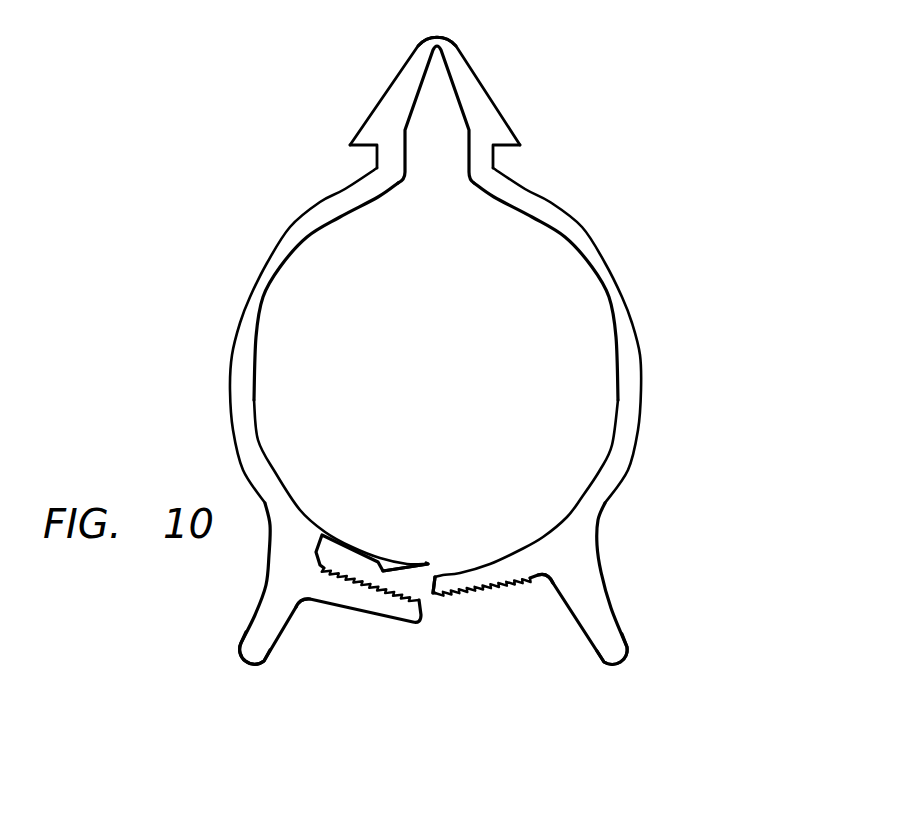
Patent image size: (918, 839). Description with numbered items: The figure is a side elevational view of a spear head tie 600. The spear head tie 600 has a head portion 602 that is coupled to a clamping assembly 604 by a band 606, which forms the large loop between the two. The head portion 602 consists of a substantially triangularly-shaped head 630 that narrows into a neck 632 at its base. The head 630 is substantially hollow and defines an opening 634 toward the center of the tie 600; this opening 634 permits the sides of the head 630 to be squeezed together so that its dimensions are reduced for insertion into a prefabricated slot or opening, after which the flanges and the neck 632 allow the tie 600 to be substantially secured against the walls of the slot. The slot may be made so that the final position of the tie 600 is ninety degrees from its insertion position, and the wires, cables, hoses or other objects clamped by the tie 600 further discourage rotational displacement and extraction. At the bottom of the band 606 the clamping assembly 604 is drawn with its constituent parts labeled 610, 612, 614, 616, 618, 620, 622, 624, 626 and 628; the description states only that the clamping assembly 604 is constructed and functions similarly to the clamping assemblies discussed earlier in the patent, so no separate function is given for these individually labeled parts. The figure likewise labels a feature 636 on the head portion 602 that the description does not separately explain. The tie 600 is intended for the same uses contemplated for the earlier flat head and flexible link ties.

The spear head tie 600 is at (709, 129).
The head portion 602 is at (604, 124).
The clamping assembly 604 is at (678, 584).
The band 606 is at (641, 362).
The first leg 610 is at (295, 674).
The second leg 612 is at (556, 687).
The first foot 614 is at (243, 660).
The lower jaw arm 616 is at (412, 626).
The lower jaw teeth 618 is at (360, 604).
The upper jaw flap 620 is at (423, 559).
The engagement gap 622 is at (432, 607).
The second foot 624 is at (618, 660).
The second jaw 626 is at (442, 573).
The second jaw teeth 628 is at (506, 607).
The triangularly-shaped head 630 is at (497, 117).
The neck 632 is at (349, 163).
The opening 634 is at (434, 199).
The arrow tip 636 is at (377, 50).